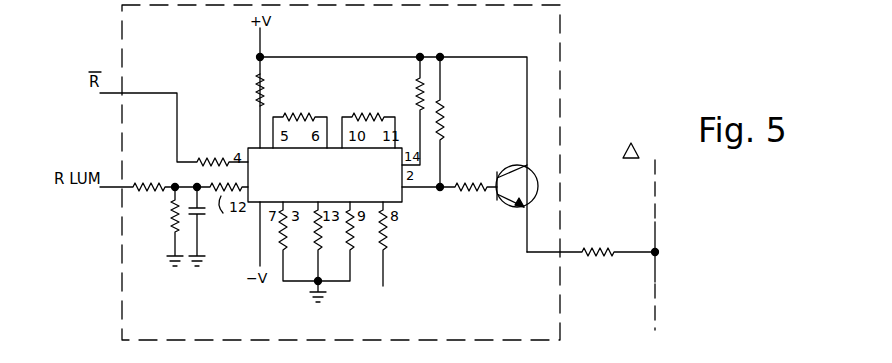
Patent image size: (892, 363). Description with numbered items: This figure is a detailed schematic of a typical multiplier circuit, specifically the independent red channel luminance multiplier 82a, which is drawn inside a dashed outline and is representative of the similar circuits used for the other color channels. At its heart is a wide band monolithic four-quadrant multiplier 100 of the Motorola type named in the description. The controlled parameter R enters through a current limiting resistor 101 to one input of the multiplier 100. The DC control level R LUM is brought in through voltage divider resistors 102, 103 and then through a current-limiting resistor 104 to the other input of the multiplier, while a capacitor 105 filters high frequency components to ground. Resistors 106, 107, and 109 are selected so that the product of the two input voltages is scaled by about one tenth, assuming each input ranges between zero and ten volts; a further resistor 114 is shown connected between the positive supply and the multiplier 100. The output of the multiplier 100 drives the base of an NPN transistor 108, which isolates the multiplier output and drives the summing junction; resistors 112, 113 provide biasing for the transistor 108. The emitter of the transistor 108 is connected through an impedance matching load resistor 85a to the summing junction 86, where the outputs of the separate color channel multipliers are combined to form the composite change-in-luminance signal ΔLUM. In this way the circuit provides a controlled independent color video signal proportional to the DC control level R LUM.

The independent red channel luminance multiplier 82a is at (559, 79).
The impedance matching resistor 85a is at (581, 250).
The summing junction 86 is at (659, 227).
The four-quadrant multiplier 100 is at (403, 197).
The current limiting resistor 101 is at (221, 160).
The voltage divider resistor 102 is at (162, 164).
The voltage divider resistor 103 is at (173, 209).
The current-limiting resistor 104 is at (207, 212).
The capacitor 105 is at (211, 197).
The scaling resistor 106 is at (317, 118).
The scaling resistor 107 is at (379, 118).
The NPN transistor 108 is at (507, 207).
The scaling resistor 109 is at (334, 289).
The biasing resistor 112 is at (468, 178).
The biasing resistor 113 is at (443, 118).
The resistor 114 is at (419, 88).